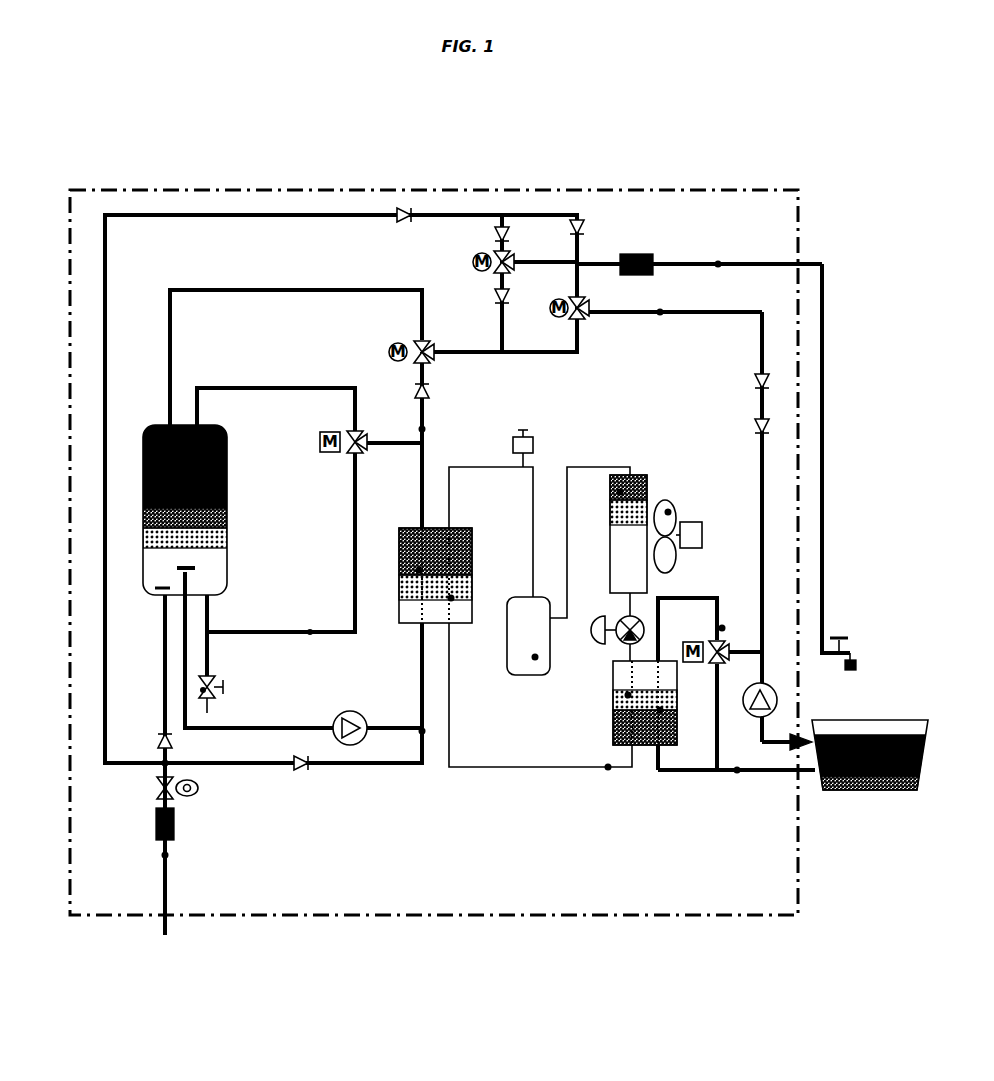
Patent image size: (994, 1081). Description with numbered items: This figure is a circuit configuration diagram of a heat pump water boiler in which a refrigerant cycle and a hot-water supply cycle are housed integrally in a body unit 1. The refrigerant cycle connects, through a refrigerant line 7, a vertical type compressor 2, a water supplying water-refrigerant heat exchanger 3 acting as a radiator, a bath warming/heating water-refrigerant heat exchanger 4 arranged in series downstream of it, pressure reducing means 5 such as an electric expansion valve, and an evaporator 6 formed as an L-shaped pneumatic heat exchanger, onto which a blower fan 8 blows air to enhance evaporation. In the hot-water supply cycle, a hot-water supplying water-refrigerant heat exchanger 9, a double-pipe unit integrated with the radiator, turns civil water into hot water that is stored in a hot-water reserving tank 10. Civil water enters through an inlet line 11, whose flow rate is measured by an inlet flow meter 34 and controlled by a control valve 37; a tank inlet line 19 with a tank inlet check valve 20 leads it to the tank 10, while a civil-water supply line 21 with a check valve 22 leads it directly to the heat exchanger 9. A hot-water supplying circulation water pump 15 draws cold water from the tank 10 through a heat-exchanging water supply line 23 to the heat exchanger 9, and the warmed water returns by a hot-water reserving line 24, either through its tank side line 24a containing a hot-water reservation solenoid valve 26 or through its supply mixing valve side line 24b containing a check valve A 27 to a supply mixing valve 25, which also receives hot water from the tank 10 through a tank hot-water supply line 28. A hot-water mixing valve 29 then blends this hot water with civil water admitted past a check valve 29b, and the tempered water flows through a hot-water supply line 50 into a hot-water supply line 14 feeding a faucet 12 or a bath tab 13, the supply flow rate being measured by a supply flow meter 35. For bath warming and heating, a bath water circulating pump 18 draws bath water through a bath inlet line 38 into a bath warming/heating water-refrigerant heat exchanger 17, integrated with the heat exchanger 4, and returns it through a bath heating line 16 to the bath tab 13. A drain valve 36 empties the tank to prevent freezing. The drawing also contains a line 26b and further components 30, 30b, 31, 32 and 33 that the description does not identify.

The body unit 1 is at (627, 190).
The vertical type compressor 2 is at (536, 659).
The water supplying water-refrigerant heat exchanger 3 is at (452, 600).
The bath warming/heating water-refrigerant heat exchanger 4 is at (628, 696).
The pressure reducing means 5 is at (622, 640).
The evaporator 6 is at (620, 492).
The refrigerant line 7 is at (610, 769).
The blower fan 8 is at (668, 512).
The hot-water supplying water-refrigerant heat exchanger 9 is at (419, 571).
The hot-water reserving tank 10 is at (143, 525).
The inlet line 11 is at (167, 856).
The faucet 12 is at (856, 652).
The bath tab 13 is at (885, 792).
The hot-water supply line 14 is at (826, 372).
The hot-water supplying circulation water pump 15 is at (356, 736).
The bath heating line 16 is at (739, 772).
The bath warming/heating water-refrigerant heat exchanger 17 is at (661, 712).
The bath water circulating pump 18 is at (771, 714).
The tank inlet line 19 is at (163, 644).
The tank inlet check valve 20 is at (165, 748).
The civil-water supply line 21 is at (350, 765).
The check valve 22 is at (300, 770).
The heat-exchanging water supply line 23 is at (183, 673).
The hot-water reserving line 24 is at (418, 485).
The hot-water reservation tank side line 24a is at (295, 386).
The supply mixing valve side line 24b is at (424, 430).
The supply mixing valve 25 is at (431, 345).
The hot-water reservation solenoid valve 26 is at (349, 450).
The line 26b is at (310, 630).
The check valve A 27 is at (430, 388).
The tank hot-water supply line 28 is at (212, 288).
The hot-water mixing valve 29 is at (499, 258).
The check valve 29b is at (400, 212).
The motor valve 30 is at (586, 318).
The check valve 30b is at (575, 225).
The line 31 is at (662, 315).
The check valves 32 is at (766, 385).
The motor valve 33 is at (722, 628).
The inlet flow meter 34 is at (156, 826).
The supply flow meter 35 is at (644, 256).
The drain valve 36 is at (203, 690).
The control valve 37 is at (526, 436).
The bath inlet line 38 is at (795, 738).
The hot-water supply line 50 is at (719, 262).